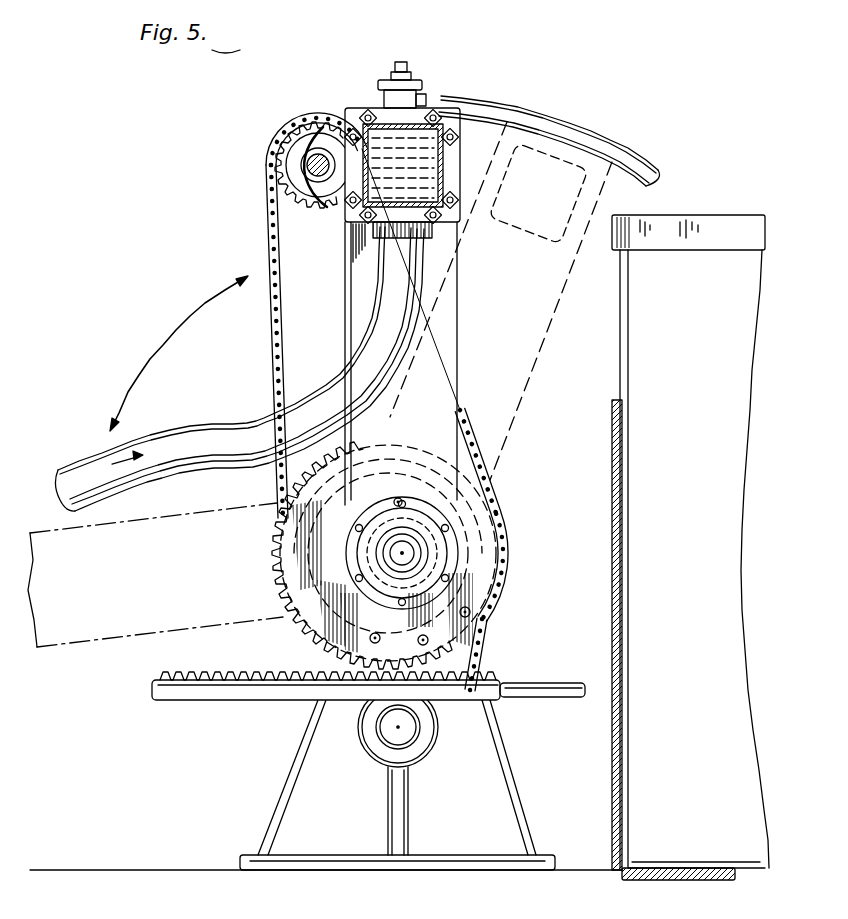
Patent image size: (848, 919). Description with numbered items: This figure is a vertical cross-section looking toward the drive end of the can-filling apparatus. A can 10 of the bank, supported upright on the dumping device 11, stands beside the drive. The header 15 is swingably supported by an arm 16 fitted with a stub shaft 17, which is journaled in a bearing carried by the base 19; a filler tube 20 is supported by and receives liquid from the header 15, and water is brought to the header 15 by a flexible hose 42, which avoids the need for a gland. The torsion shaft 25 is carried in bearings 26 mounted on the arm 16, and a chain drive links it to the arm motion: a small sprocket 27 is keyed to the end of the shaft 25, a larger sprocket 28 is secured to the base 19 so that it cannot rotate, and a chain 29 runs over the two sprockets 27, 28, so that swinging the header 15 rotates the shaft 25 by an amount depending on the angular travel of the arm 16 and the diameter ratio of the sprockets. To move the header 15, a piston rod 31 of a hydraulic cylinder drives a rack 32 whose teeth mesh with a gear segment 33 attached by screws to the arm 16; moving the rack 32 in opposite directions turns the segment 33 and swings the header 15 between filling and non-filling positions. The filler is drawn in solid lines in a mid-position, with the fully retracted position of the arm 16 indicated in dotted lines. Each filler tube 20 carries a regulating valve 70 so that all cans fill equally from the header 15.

The can 10 is at (703, 415).
The dumping device 11 is at (612, 625).
The header 15 is at (425, 130).
The arm 16 is at (350, 275).
The stub shaft 17 is at (412, 553).
The base 19 is at (298, 800).
The filler tube 20 is at (598, 142).
The torsion shaft 25 is at (305, 165).
The bearing 26 is at (322, 150).
The small sprocket 27 is at (270, 198).
The larger sprocket 28 is at (483, 523).
The chain 29 is at (276, 337).
The piston rod 31 is at (398, 497).
The rack 32 is at (222, 697).
The gear segment 33 is at (282, 588).
The flexible hose 42 is at (215, 440).
The regulating valve 70 is at (401, 61).